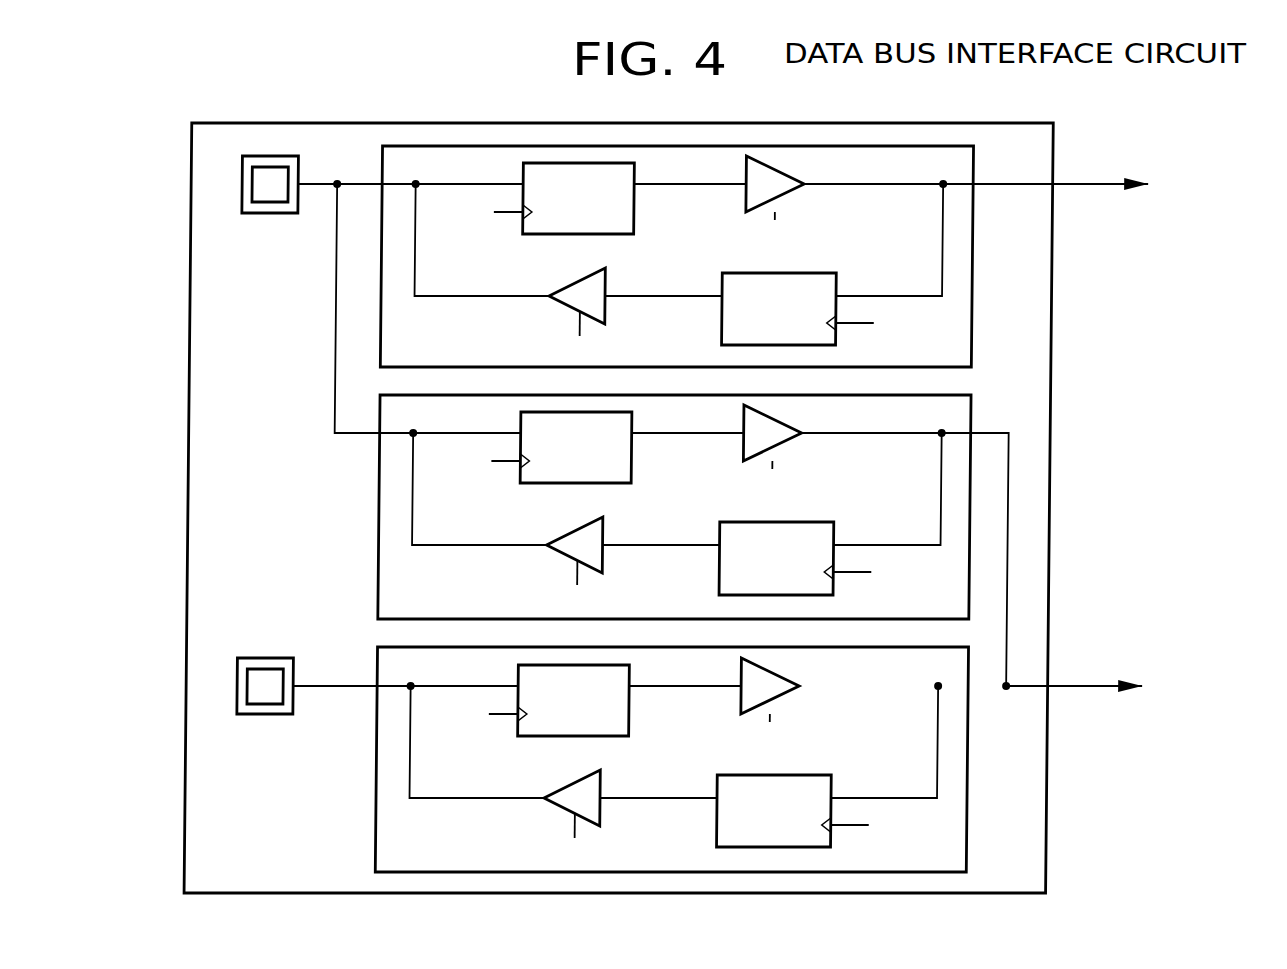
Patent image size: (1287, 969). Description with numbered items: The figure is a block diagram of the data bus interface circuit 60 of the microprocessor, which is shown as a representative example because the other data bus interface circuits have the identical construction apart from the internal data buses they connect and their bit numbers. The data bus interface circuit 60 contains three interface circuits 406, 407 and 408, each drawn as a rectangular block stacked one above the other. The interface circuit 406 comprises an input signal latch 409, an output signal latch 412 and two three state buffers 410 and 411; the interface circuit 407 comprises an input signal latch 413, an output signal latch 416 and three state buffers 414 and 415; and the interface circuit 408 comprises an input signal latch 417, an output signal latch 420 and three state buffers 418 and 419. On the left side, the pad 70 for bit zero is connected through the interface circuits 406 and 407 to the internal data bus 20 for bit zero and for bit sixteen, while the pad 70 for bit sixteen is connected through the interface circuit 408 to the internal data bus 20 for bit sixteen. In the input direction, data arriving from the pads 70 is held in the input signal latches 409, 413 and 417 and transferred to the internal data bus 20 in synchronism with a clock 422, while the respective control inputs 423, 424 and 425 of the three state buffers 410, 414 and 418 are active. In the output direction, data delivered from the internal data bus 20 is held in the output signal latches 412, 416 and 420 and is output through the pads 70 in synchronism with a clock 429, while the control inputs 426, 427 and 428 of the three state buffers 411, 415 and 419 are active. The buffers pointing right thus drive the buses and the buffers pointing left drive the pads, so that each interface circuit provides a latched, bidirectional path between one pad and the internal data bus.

The data bus interface circuit 60 is at (845, 123).
The internal data bus 20 is at (1095, 184).
The pad 70 is at (282, 213).
The interface circuit 406 is at (384, 345).
The interface circuit 407 is at (384, 597).
The interface circuit 408 is at (384, 847).
The input signal latch 409 is at (636, 221).
The three state buffer 410 is at (789, 196).
The three state buffer 411 is at (566, 305).
The output signal latch 412 is at (725, 328).
The input signal latch 413 is at (636, 470).
The three state buffer 414 is at (789, 445).
The three state buffer 415 is at (566, 554).
The output signal latch 416 is at (725, 578).
The input signal latch 417 is at (636, 722).
The three state buffer 418 is at (789, 698).
The three state buffer 419 is at (566, 807).
The output signal latch 420 is at (725, 828).
The clock 422 is at (481, 462).
The input of three state buffer 423 is at (777, 231).
The input of three state buffer 424 is at (776, 481).
The input of three state buffer 425 is at (772, 734).
The input of three state buffer 426 is at (588, 337).
The input of three state buffer 427 is at (583, 588).
The input of three state buffer 428 is at (582, 839).
The clock 429 is at (881, 573).